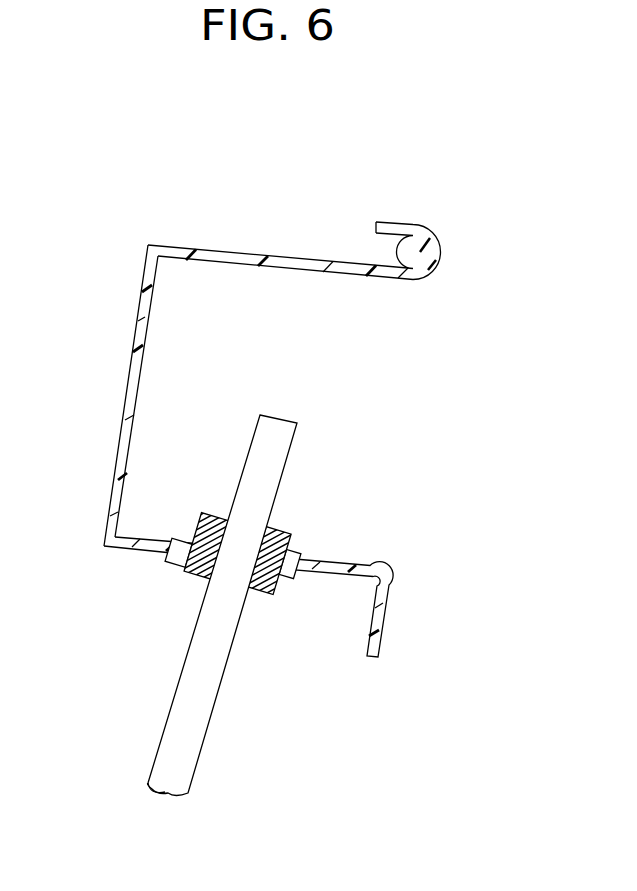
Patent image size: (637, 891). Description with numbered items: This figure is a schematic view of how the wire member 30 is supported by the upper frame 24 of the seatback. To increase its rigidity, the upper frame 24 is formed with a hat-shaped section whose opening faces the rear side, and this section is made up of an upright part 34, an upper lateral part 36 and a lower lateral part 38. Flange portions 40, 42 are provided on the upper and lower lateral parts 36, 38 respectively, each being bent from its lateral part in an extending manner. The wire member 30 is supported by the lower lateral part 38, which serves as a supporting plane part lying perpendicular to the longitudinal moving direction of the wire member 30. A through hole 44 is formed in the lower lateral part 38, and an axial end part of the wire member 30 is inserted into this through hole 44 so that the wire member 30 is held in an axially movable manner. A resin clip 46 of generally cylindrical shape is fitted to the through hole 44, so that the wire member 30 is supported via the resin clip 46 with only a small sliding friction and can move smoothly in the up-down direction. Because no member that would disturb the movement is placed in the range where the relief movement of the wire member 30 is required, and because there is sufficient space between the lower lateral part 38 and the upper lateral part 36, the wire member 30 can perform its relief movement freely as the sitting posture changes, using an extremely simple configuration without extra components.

The upper frame 24 is at (277, 402).
The wire member 30 is at (171, 738).
The upright part 34 is at (128, 376).
The upper lateral part 36 is at (333, 232).
The lower lateral part 38 is at (148, 555).
The flange portion 40 is at (436, 240).
The flange portion 42 is at (385, 619).
The through hole 44 is at (222, 522).
The resin clip 46 is at (254, 590).